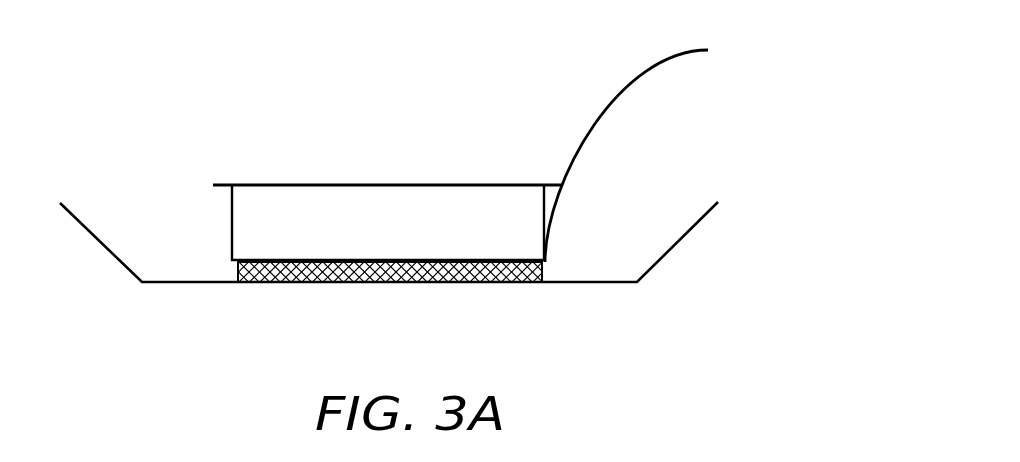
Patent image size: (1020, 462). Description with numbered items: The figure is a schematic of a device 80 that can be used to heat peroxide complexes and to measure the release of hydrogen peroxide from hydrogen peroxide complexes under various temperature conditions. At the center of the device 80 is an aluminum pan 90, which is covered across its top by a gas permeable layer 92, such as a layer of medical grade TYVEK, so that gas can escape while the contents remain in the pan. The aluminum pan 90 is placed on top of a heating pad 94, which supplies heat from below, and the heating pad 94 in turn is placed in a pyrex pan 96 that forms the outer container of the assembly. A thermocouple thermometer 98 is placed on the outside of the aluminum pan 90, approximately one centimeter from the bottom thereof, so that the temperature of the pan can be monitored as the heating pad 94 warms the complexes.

The device 80 is at (465, 78).
The aluminum pan 90 is at (232, 230).
The gas permeable layer 92 is at (348, 184).
The heating pad 94 is at (333, 284).
The pyrex pan 96 is at (488, 284).
The thermocouple thermometer 98 is at (573, 157).